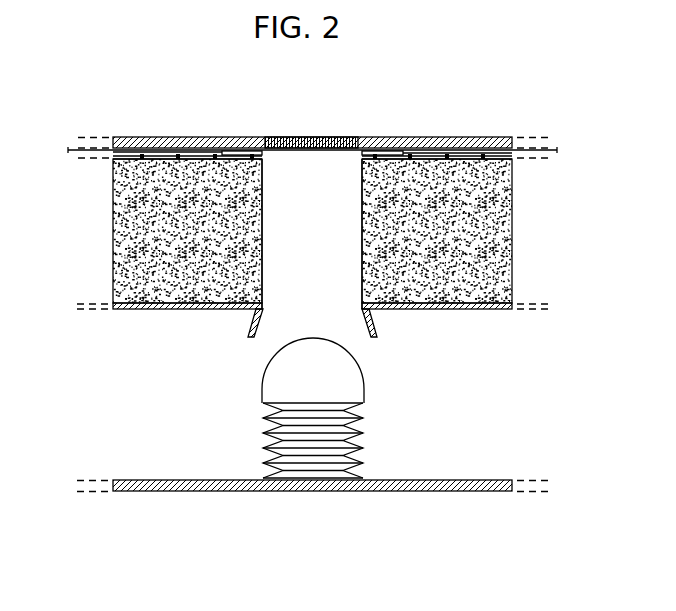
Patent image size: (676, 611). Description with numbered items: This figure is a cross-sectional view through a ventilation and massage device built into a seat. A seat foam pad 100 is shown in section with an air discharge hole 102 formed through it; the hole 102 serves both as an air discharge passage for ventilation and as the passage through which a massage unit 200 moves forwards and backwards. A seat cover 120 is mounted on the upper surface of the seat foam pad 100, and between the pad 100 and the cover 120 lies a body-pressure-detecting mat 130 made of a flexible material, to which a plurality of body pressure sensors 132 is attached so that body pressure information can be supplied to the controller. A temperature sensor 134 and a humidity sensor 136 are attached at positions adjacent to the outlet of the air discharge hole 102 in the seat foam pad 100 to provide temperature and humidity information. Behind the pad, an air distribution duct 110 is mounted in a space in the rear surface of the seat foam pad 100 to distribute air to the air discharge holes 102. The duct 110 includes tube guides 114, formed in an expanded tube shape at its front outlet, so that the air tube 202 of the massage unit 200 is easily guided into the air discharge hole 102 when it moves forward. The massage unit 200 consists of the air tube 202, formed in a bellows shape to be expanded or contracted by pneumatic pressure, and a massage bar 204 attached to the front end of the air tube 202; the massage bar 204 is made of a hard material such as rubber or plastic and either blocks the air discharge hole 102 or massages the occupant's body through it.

The seat foam pad 100 is at (120, 213).
The air discharge hole 102 is at (265, 288).
The air distribution duct 110 is at (155, 487).
The tube guide 114 is at (375, 323).
The seat cover 120 is at (465, 137).
The body-pressure-detecting mat 130 is at (128, 156).
The body pressure sensor 132 is at (178, 155).
The temperature sensor 134 is at (388, 152).
The humidity sensor 136 is at (236, 152).
The massage unit 200 is at (395, 408).
The air tube 202 is at (358, 463).
The massage bar 204 is at (355, 383).